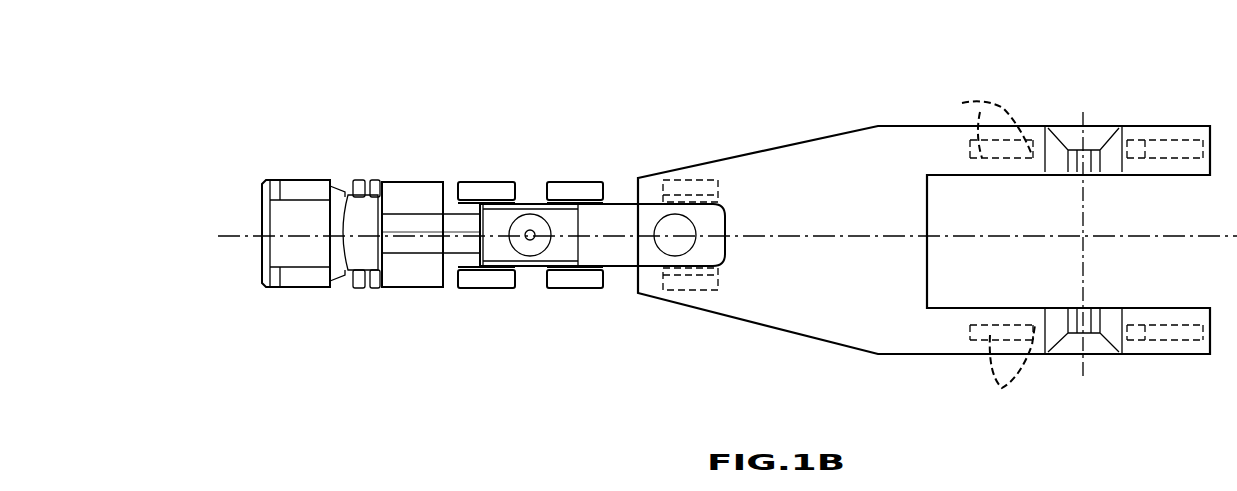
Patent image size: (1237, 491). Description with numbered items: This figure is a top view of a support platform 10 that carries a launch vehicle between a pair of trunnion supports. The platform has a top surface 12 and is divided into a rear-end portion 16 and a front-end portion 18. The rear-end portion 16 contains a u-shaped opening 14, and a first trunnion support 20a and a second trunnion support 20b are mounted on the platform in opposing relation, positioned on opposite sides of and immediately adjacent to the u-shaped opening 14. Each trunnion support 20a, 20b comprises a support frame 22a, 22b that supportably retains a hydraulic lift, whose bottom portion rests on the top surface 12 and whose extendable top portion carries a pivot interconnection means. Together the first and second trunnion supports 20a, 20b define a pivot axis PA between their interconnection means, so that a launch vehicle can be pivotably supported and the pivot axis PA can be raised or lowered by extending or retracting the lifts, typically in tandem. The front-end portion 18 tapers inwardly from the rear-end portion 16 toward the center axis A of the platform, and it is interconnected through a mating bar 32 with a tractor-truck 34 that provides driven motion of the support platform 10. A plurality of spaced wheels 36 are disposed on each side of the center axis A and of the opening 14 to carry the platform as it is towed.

The center axis A is at (717, 237).
The support platform 10 is at (648, 158).
The top surface 12 is at (785, 285).
The u-shaped opening 14 is at (962, 214).
The rear-end portion 16 is at (1210, 120).
The front-end portion 18 is at (640, 142).
The first trunnion support 20a is at (1098, 299).
The second trunnion support 20b is at (1098, 186).
The support frame 22a is at (1105, 354).
The support frame 22b is at (1108, 128).
The pivot axis PA is at (1085, 249).
The mating bar 32 is at (600, 270).
The tractor-truck 34 is at (293, 190).
The spaced wheels 36 is at (980, 259).